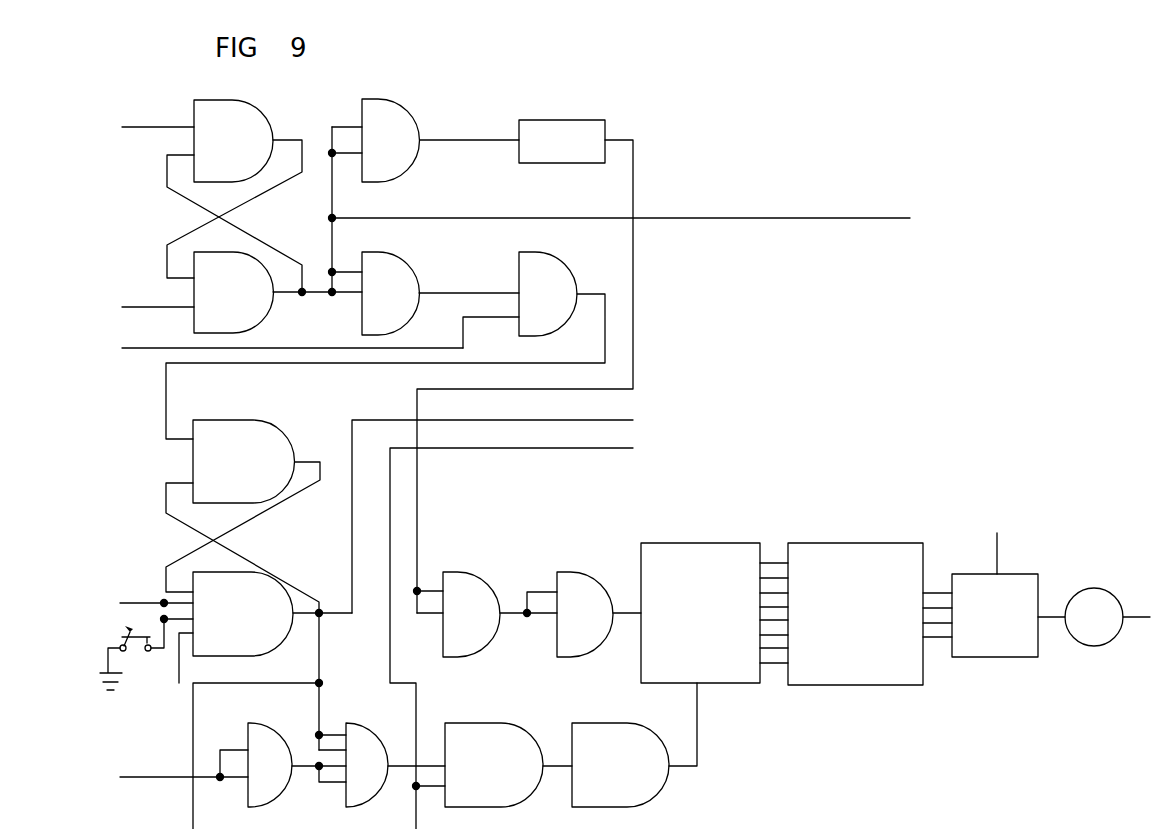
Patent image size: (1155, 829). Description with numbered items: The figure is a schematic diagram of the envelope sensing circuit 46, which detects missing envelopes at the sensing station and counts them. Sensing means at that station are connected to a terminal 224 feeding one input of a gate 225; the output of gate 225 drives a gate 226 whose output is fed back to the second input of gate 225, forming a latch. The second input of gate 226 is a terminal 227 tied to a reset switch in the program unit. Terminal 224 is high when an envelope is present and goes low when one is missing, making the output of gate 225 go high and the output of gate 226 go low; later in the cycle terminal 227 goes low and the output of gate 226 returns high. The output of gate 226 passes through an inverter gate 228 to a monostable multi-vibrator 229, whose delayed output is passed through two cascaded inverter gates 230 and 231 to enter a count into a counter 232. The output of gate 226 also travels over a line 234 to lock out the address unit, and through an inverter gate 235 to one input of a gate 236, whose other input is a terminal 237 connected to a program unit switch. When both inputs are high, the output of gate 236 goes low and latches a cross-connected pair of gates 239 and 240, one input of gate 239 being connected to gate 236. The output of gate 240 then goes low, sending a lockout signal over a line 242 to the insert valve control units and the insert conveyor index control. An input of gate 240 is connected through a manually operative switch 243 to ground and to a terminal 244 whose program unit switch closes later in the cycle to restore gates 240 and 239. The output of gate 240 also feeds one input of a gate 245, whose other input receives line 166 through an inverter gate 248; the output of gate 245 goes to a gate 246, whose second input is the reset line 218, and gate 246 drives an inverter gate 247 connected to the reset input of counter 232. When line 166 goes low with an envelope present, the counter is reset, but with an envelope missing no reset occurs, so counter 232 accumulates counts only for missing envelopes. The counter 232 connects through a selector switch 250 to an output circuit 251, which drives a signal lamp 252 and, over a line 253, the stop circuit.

The envelope sensing circuit 46 is at (863, 124).
The terminal 224 is at (122, 125).
The gate 225 is at (243, 115).
The gate 226 is at (257, 303).
The terminal 227 is at (142, 306).
The gate 228 is at (383, 113).
The monostable multi-vibrator 229 is at (570, 130).
The line 234 is at (713, 217).
The gate 235 is at (403, 277).
The gate 236 is at (557, 270).
The terminal 237 is at (153, 349).
The gate 239 is at (265, 437).
The gate 240 is at (267, 590).
The line 242 is at (520, 420).
The reset line 218 is at (520, 448).
The terminal 244 is at (145, 583).
The manually operative switch 243 is at (122, 628).
The line 166 is at (140, 777).
The gate 248 is at (257, 733).
The gate 245 is at (357, 733).
The gate 246 is at (488, 733).
The gate 247 is at (625, 733).
The gate 230 is at (465, 585).
The gate 231 is at (578, 583).
The counter 232 is at (692, 550).
The selector switch 250 is at (853, 550).
The output circuit 251 is at (1013, 585).
The signal lamp 252 is at (1087, 632).
The line 253 is at (997, 533).